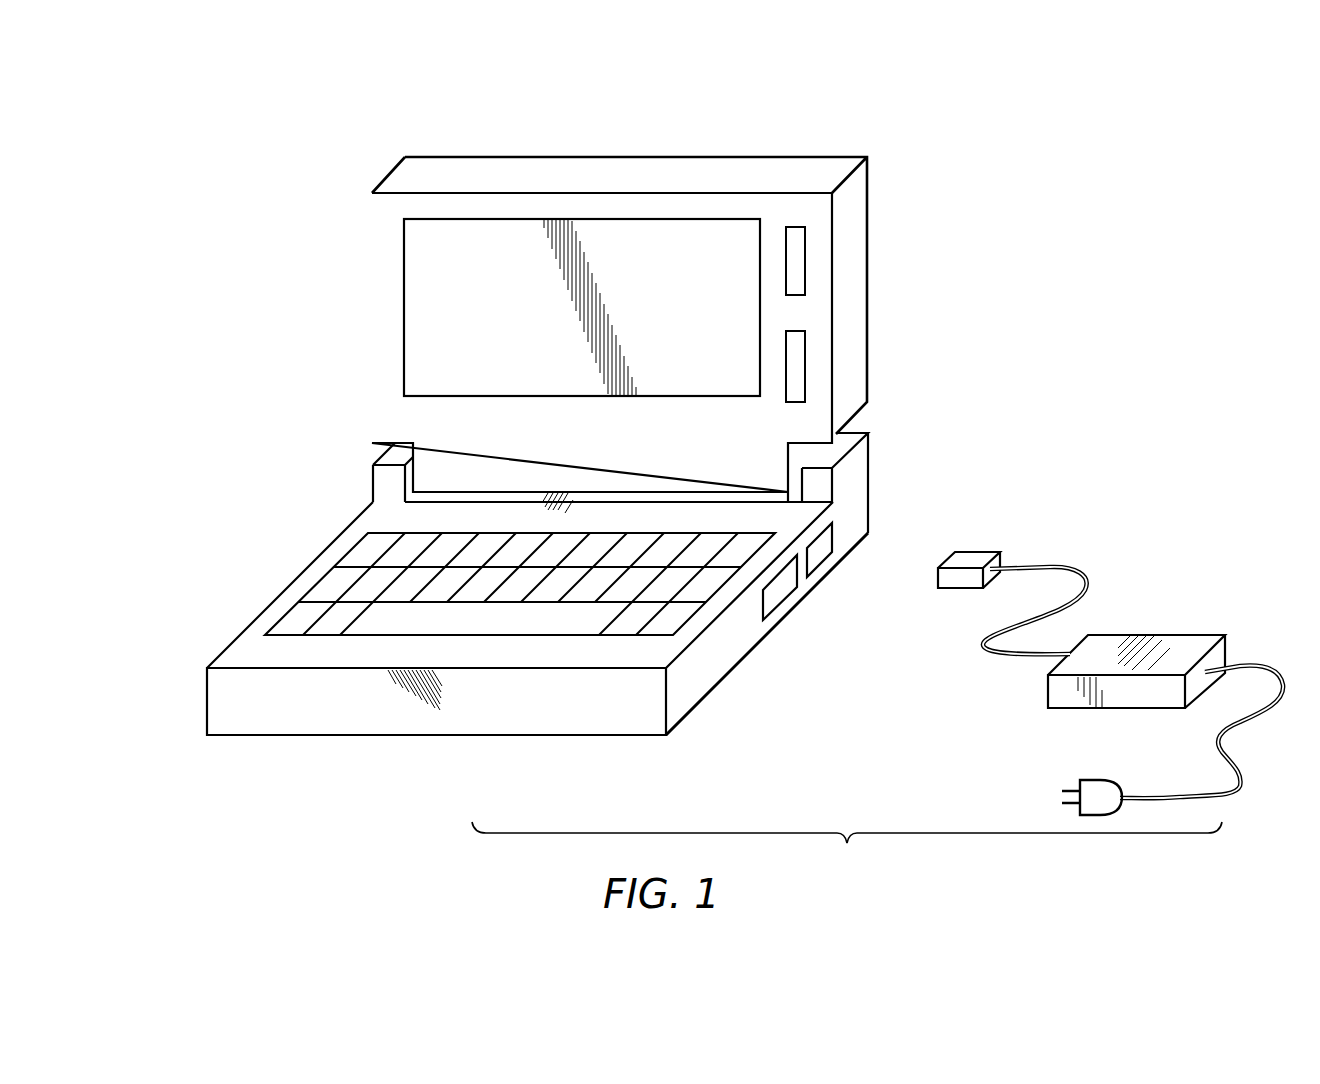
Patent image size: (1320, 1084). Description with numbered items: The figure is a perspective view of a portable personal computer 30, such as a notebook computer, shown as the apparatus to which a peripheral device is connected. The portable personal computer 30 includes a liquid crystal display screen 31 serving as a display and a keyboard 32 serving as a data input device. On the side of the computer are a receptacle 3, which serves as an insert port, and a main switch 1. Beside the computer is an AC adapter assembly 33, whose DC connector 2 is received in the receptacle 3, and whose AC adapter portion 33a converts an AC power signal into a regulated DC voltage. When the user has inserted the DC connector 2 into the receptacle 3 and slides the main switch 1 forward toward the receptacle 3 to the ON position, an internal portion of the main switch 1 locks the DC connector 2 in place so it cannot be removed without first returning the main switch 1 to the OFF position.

The portable personal computer 30 is at (857, 498).
The liquid crystal display (LCD) screen 31 is at (420, 313).
The keyboard 32 is at (330, 583).
The main switch 1 is at (775, 602).
The receptacle 3 is at (820, 565).
The DC connector 2 is at (972, 553).
The AC adapter assembly 33 is at (1126, 582).
The AC adapter portion 33a is at (1175, 642).